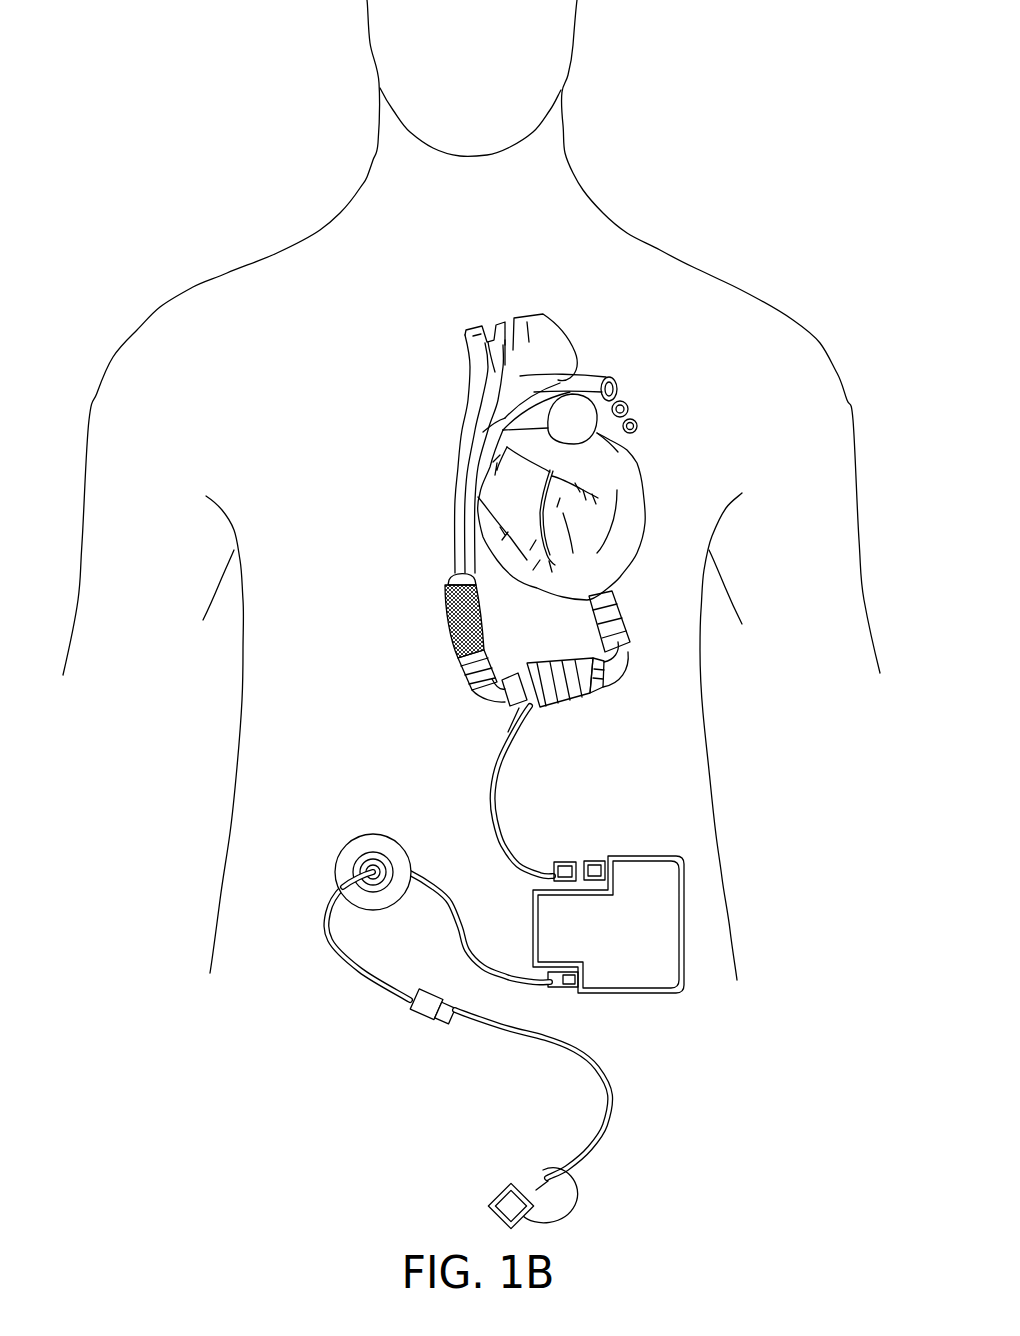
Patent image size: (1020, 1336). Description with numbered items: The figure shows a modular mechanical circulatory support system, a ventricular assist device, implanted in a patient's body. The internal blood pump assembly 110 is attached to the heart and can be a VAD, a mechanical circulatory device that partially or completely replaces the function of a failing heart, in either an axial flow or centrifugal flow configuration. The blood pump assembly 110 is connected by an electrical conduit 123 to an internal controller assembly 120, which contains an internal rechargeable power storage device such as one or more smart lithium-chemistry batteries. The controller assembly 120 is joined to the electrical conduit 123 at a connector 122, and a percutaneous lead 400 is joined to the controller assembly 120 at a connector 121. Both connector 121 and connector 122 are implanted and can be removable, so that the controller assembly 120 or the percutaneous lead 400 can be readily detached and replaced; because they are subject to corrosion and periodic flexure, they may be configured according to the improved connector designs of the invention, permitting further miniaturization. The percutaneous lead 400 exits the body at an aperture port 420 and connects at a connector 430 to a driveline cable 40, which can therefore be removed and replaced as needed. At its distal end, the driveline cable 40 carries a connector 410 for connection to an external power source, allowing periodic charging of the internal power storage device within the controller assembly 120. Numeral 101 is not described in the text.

The implantable blood pump 101 is at (433, 610).
The blood pump assembly 110 is at (557, 693).
The electrical conduit 123 is at (493, 800).
The connector 122 is at (594, 862).
The controller assembly 120 is at (693, 928).
The connector 121 is at (575, 998).
The percutaneous lead 400 is at (307, 908).
The aperture port 420 is at (343, 853).
The connector 430 is at (422, 1020).
The driveline cable 40 is at (620, 1097).
The connector 410 is at (507, 1198).